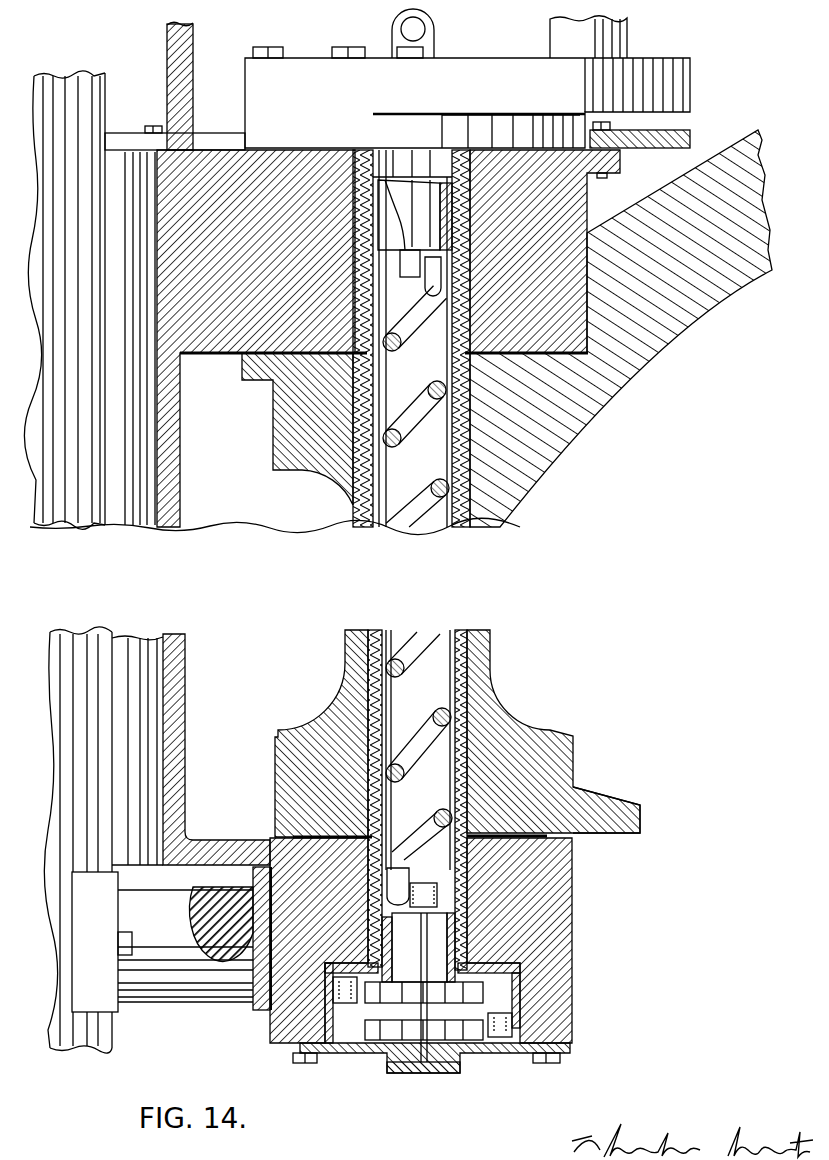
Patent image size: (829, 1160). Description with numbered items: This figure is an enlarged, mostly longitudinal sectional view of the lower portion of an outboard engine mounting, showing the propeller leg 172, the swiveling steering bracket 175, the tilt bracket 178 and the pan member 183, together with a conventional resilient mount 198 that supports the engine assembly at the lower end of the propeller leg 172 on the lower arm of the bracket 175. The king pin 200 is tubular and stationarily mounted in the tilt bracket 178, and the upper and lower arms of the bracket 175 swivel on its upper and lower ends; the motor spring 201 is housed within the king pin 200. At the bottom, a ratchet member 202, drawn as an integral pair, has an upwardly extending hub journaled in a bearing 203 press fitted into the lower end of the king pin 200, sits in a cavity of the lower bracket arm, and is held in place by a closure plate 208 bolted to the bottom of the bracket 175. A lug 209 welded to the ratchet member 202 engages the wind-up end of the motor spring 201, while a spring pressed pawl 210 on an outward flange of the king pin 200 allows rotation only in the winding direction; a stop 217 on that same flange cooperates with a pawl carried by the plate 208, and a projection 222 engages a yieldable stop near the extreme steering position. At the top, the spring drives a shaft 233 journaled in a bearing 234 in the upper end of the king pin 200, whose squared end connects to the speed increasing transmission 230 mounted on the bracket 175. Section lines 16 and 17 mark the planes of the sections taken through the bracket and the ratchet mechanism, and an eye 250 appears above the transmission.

The propeller leg 172 is at (85, 73).
The swiveling steering bracket 175 is at (180, 481).
The tilt bracket 178 is at (557, 441).
The pan member 183 is at (688, 137).
The resilient mount 198 is at (158, 929).
The king pin 200 is at (452, 370).
The motor spring 201 is at (424, 412).
The ratchet member 202 is at (408, 1033).
The bearing 203 is at (448, 890).
The closure plate 208 is at (430, 1073).
The lug 209 is at (402, 860).
The spring pressed pawl 210 is at (347, 1003).
The stop 217 is at (520, 997).
The projection 222 is at (623, 833).
The speed increasing transmission 230 is at (412, 99).
The shaft 233 is at (395, 198).
The bearing 234 is at (414, 276).
The lifting eye 250 is at (436, 40).
The section line 16— 16 is at (550, 742).
The section line 17— 17 is at (233, 1002).